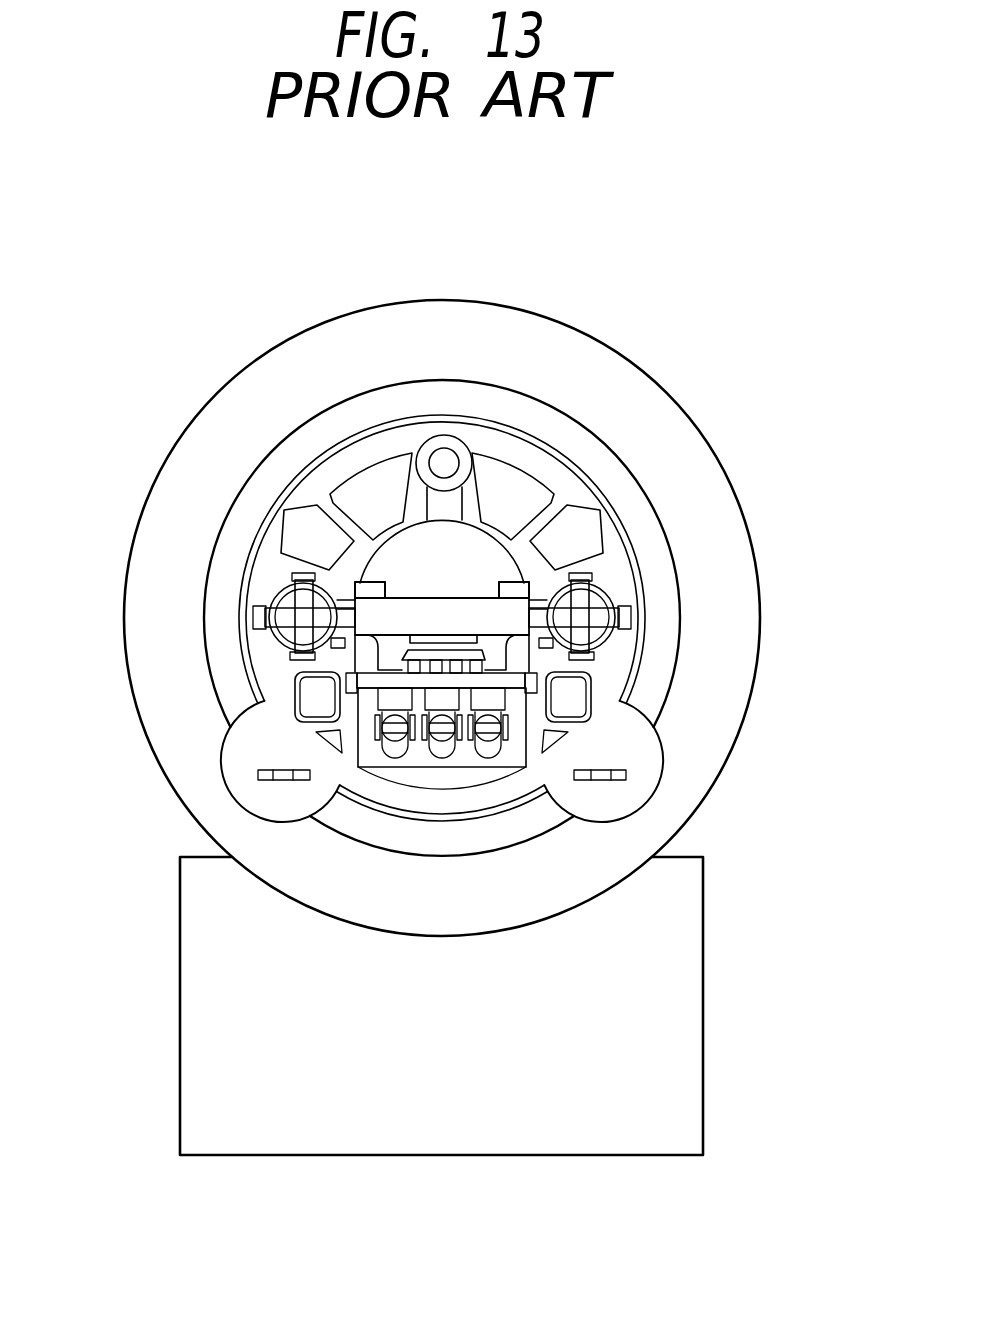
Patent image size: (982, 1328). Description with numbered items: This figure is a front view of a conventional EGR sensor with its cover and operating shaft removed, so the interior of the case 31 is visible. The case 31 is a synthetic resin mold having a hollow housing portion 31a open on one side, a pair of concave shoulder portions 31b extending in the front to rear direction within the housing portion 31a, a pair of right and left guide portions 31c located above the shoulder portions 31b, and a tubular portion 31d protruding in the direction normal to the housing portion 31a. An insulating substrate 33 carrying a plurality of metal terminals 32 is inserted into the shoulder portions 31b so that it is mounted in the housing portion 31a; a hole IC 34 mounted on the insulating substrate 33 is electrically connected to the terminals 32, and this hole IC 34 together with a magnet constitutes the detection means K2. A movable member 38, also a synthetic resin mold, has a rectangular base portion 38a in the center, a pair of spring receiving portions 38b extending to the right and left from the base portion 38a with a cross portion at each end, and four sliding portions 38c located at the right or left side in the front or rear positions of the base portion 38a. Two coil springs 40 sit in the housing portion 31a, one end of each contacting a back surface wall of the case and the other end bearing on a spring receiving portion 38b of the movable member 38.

The case 31 is at (474, 618).
The housing portion 31a is at (443, 535).
The shoulder portions 31b is at (446, 763).
The guide portions 31c is at (233, 467).
The tubular portion 31d is at (680, 1044).
The metal terminals 32 is at (314, 777).
The insulating substrate 33 is at (422, 843).
The hole IC 34 is at (465, 838).
The movable member 38 is at (442, 449).
The base portion 38a is at (430, 417).
The spring receiving portions 38b is at (451, 667).
The sliding portions 38c is at (522, 412).
The coil springs 40 is at (464, 600).
The detection means K2 is at (586, 810).